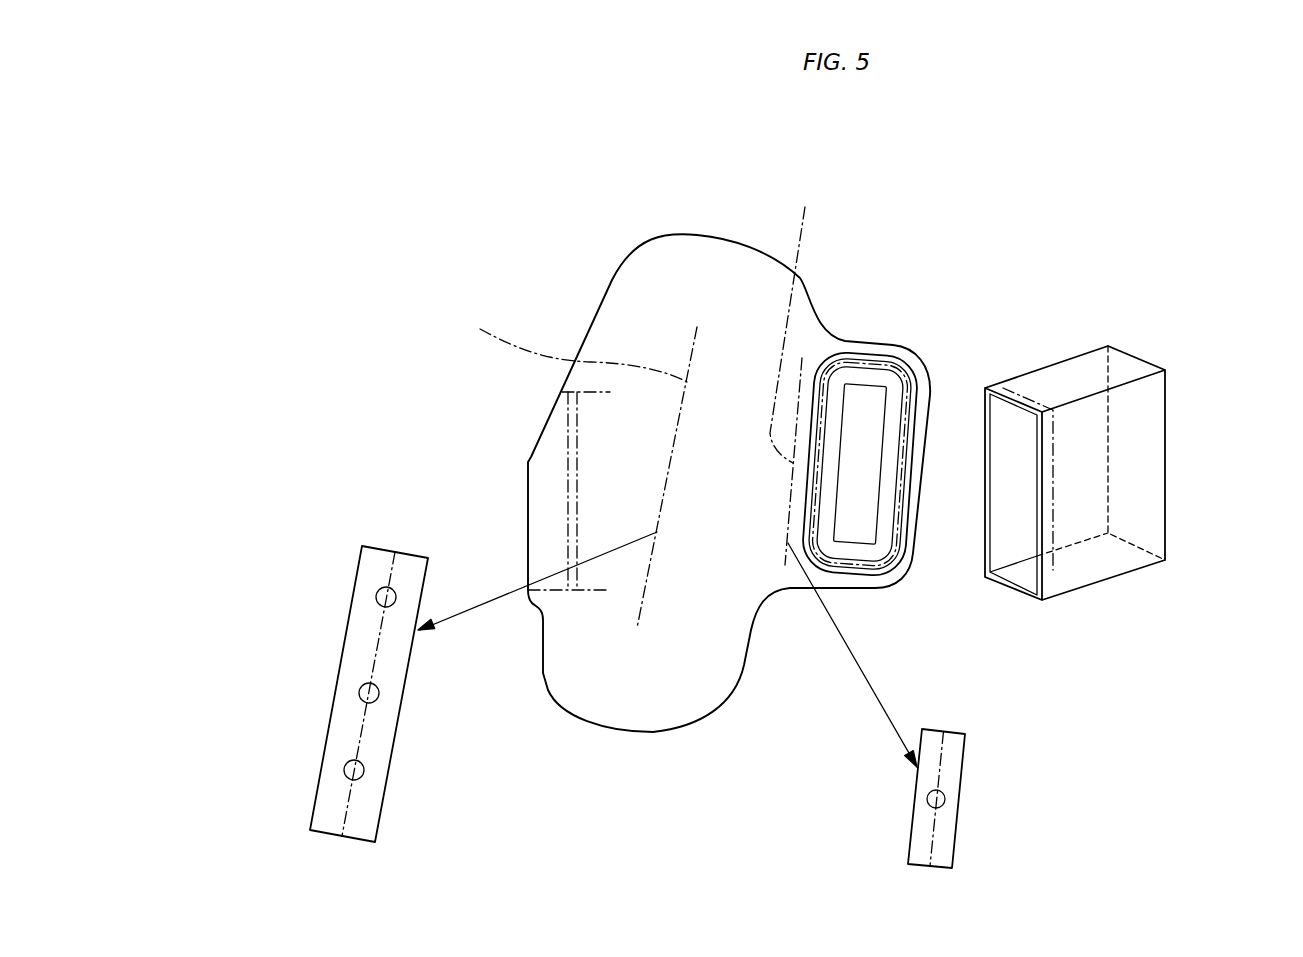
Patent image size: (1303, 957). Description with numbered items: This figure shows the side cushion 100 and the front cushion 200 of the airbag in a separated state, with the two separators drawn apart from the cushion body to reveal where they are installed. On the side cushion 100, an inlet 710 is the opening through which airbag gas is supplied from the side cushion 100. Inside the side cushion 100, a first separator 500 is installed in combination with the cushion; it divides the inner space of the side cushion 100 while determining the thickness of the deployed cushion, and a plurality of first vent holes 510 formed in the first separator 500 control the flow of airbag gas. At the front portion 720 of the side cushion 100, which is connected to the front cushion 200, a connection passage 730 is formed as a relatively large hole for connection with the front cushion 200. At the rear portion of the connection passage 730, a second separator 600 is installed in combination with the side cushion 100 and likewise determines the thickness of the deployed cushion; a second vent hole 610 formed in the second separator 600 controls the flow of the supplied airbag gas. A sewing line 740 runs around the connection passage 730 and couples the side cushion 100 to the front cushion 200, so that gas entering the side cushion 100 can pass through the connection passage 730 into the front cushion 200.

The side cushion 100 is at (695, 235).
The front cushion 200 is at (1148, 462).
The first separator 500 is at (278, 647).
The first vent holes 510 is at (376, 595).
The second separator 600 is at (1010, 840).
The second vent hole 610 is at (946, 799).
The inlet 710 is at (548, 503).
The front portion 720 is at (883, 588).
The connection passage 730 is at (880, 433).
The sewing line 740 is at (1015, 392).